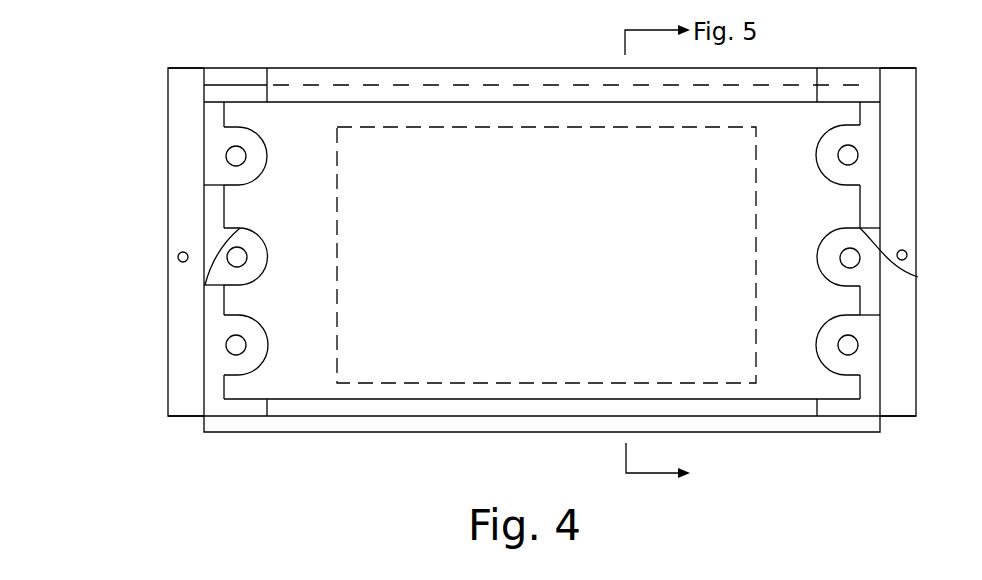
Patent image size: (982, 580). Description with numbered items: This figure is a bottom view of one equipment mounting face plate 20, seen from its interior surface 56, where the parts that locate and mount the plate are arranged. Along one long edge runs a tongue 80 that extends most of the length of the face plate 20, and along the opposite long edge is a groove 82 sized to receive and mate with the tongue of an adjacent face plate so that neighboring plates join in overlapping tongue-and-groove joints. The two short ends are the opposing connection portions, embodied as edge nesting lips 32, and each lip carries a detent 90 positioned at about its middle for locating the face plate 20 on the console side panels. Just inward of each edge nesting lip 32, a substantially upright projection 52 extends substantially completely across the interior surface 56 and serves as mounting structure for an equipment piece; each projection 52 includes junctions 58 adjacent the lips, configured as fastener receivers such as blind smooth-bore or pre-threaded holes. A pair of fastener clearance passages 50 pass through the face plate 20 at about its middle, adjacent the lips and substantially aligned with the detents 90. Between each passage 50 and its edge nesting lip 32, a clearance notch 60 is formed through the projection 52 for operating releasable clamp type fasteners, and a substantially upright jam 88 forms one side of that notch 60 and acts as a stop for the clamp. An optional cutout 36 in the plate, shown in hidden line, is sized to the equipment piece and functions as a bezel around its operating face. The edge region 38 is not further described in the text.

The face plate 20 is at (168, 343).
The edge nesting lip 32 is at (180, 90).
The cutout 36 is at (477, 127).
The bottom end 38 is at (890, 418).
The fastener clearance passage 50 is at (243, 254).
The upright projection 52 is at (215, 92).
The interior surface 56 is at (538, 110).
The junction 58 is at (228, 152).
The clearance notch 60 is at (212, 187).
The tongue 80 is at (203, 425).
The groove 82 is at (405, 68).
The jam 88 is at (238, 226).
The detent 90 is at (180, 262).